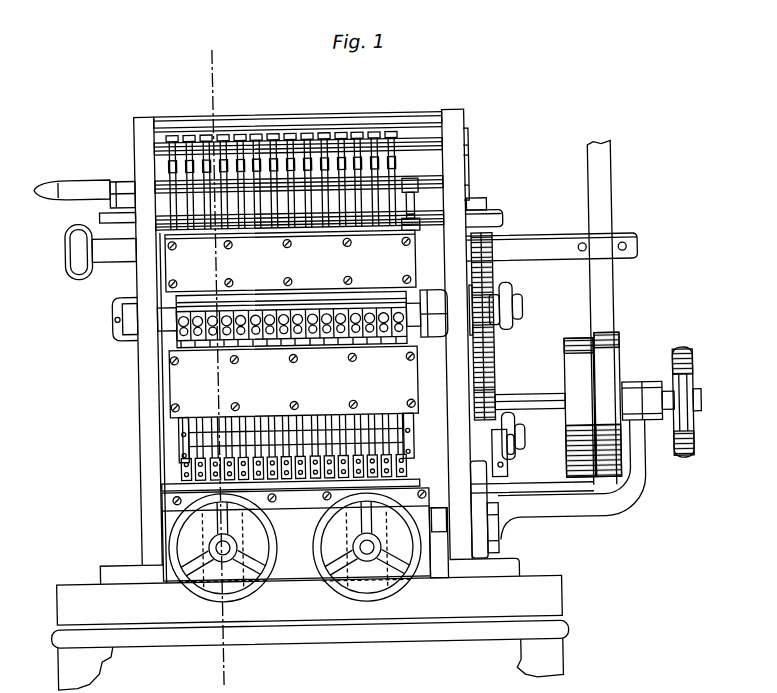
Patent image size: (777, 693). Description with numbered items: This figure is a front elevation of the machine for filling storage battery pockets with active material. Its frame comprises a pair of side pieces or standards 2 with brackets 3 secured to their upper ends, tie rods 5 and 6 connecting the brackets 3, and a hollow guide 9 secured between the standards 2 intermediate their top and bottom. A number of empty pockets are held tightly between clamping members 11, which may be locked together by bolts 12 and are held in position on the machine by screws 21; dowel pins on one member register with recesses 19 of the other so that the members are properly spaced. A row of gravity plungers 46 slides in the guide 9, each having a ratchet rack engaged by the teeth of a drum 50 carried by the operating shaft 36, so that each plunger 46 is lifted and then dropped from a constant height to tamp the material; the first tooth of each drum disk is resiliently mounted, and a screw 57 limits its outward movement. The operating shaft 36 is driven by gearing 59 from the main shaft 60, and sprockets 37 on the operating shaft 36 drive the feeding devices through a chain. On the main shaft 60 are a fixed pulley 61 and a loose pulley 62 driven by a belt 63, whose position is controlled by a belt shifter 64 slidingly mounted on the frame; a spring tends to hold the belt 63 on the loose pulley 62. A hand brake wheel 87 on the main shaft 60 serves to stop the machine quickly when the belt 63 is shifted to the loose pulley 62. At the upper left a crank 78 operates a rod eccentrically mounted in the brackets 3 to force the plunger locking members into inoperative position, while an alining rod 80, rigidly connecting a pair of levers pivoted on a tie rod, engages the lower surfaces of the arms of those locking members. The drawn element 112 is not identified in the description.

The tie rod 5 is at (426, 112).
The bracket 3 is at (153, 126).
The tie rod 6 is at (459, 156).
The crank 78 is at (73, 184).
The recess 19 is at (423, 200).
The alining rod 80 is at (424, 227).
The hollow guide 9 is at (290, 261).
The operating shaft 36 is at (421, 297).
The screw 57 is at (166, 337).
The drum 50 is at (172, 347).
The side piece or standard 2 is at (128, 460).
The plunger 46 is at (130, 430).
The clamping member 11 is at (411, 450).
The screw 21 is at (258, 540).
The bolt 12 is at (132, 545).
The belt shifter 64 is at (535, 244).
The belt 63 is at (624, 202).
The gearing 59 is at (500, 326).
The collar 112 is at (514, 352).
The sprocket 37 is at (512, 332).
The main shaft 60 is at (535, 408).
The fixed pulley 61 is at (575, 340).
The loose pulley 62 is at (640, 390).
The hand brake wheel 87 is at (689, 449).